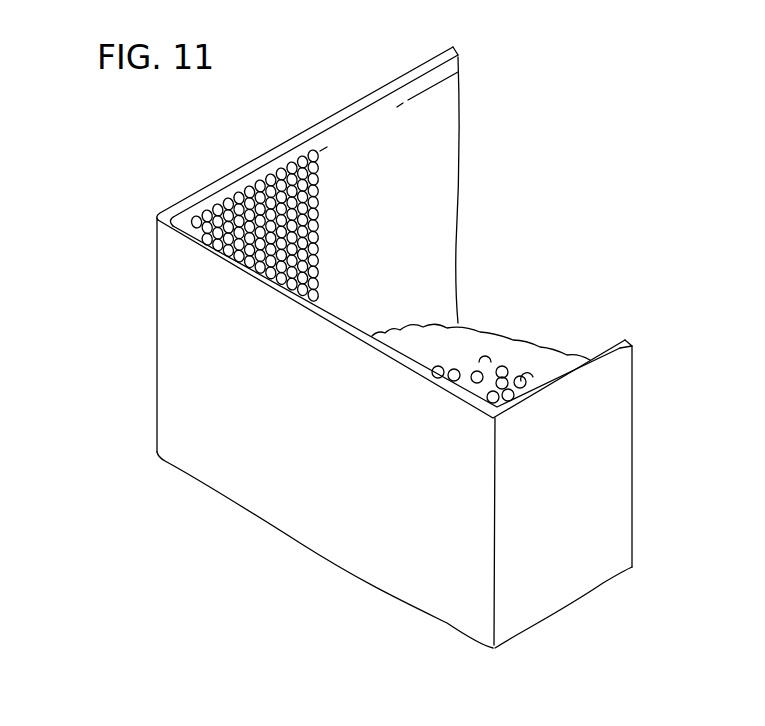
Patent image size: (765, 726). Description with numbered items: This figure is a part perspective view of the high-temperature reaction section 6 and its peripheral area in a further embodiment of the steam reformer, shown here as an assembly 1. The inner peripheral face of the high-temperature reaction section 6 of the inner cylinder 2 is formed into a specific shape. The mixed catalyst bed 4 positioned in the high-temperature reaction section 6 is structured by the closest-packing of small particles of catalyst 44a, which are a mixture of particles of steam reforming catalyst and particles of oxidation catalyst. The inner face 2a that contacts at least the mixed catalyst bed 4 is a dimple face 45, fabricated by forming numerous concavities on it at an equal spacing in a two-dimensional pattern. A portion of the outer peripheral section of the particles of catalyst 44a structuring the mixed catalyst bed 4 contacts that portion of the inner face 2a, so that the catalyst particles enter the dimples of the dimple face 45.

The granular material processing unit 1 is at (557, 98).
The inner cylinder 2 is at (155, 325).
The inner face 2a is at (400, 128).
The dimple face 45 is at (316, 187).
The particles of catalyst 44a is at (505, 367).
The high-temperature reaction section 6 is at (521, 325).
The mixed catalyst bed 4 is at (557, 322).